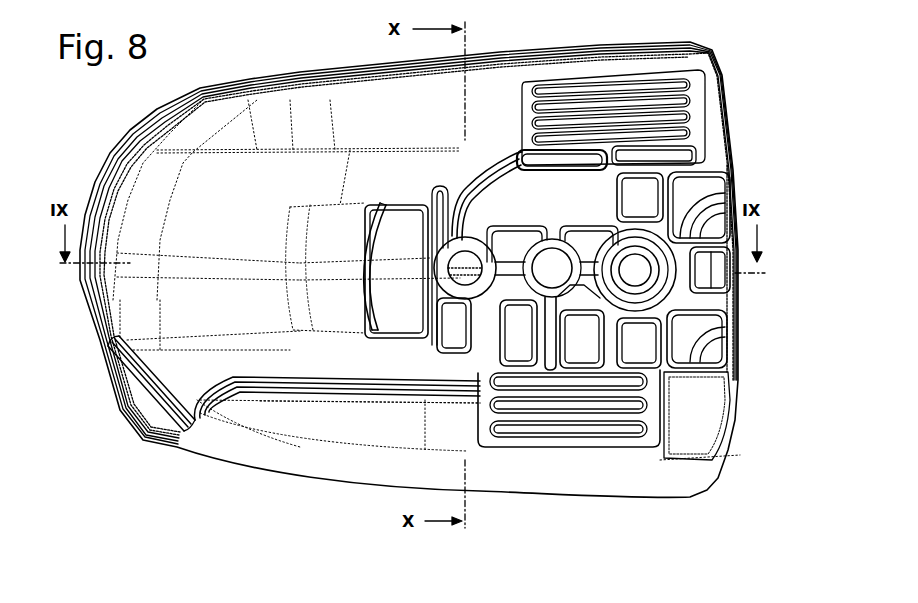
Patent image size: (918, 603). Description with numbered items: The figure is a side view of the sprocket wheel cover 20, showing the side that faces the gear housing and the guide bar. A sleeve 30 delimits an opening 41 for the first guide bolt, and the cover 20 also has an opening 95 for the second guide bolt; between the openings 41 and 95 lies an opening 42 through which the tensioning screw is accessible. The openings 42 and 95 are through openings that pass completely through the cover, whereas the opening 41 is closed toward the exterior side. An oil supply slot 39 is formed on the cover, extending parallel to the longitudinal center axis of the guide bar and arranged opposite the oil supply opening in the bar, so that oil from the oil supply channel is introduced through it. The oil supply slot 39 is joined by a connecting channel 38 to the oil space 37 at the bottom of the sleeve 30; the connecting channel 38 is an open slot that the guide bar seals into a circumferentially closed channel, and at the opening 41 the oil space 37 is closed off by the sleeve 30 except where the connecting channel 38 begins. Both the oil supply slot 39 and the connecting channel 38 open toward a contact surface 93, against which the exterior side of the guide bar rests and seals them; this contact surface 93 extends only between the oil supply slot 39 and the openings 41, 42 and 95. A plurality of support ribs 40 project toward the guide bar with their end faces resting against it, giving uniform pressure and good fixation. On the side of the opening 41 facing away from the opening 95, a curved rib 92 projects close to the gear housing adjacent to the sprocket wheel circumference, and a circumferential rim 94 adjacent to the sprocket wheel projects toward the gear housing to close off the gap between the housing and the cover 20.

The sprocket wheel cover 20 is at (703, 43).
The sleeve 30 is at (450, 268).
The oil space 37 is at (435, 268).
The connecting channel 38 is at (463, 263).
The oil supply slot 39 is at (562, 157).
The support ribs 40 is at (710, 240).
The opening 41 is at (466, 271).
The opening 42 is at (547, 283).
The rib 92 is at (363, 313).
The contact surface 93 is at (510, 192).
The circumferential rim 94 is at (108, 163).
The opening 95 is at (643, 277).